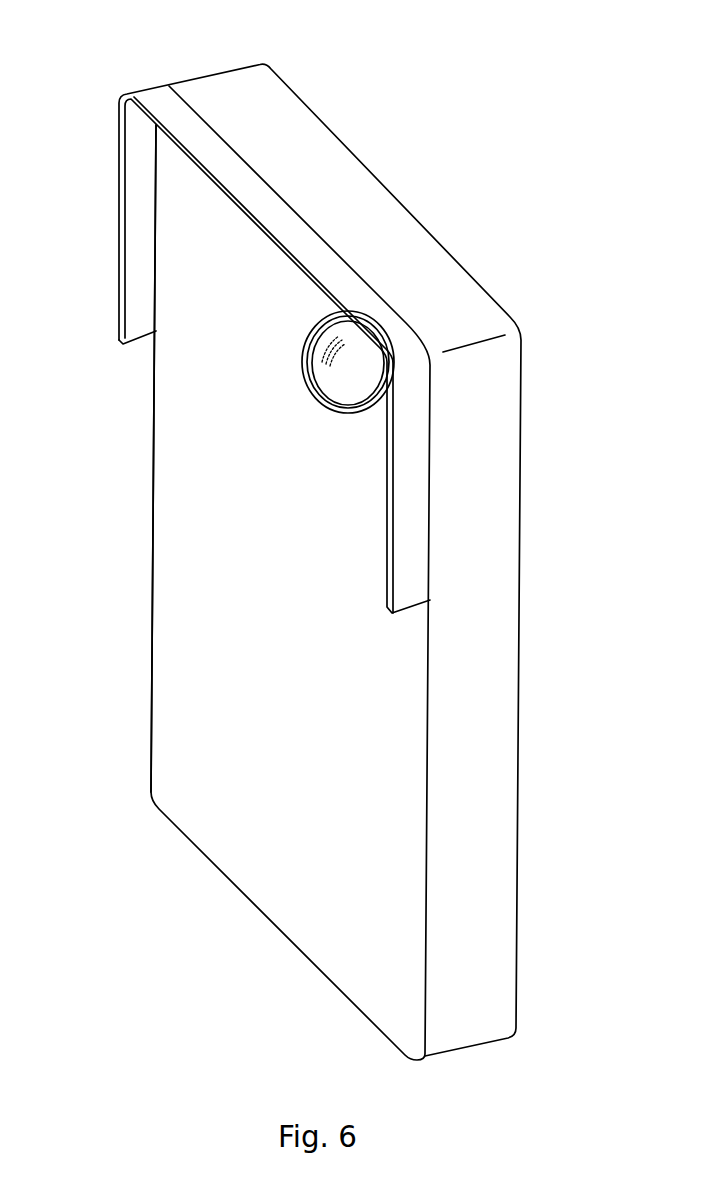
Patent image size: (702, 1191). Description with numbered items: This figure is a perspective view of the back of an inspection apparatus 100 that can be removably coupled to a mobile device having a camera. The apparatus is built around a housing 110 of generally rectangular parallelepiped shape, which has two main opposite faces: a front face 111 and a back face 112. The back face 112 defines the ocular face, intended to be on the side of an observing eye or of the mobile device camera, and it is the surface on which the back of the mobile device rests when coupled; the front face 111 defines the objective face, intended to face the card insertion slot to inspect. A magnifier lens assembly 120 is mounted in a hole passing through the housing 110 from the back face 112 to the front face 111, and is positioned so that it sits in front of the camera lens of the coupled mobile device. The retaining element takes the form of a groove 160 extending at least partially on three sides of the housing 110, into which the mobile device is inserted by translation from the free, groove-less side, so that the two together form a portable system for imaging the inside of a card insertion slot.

The inspection apparatus 100 is at (307, 538).
The housing 110 is at (323, 573).
The front face 111 is at (515, 880).
The back face 112 is at (172, 753).
The magnifier lens assembly 120 is at (350, 365).
The groove 160 is at (142, 275).